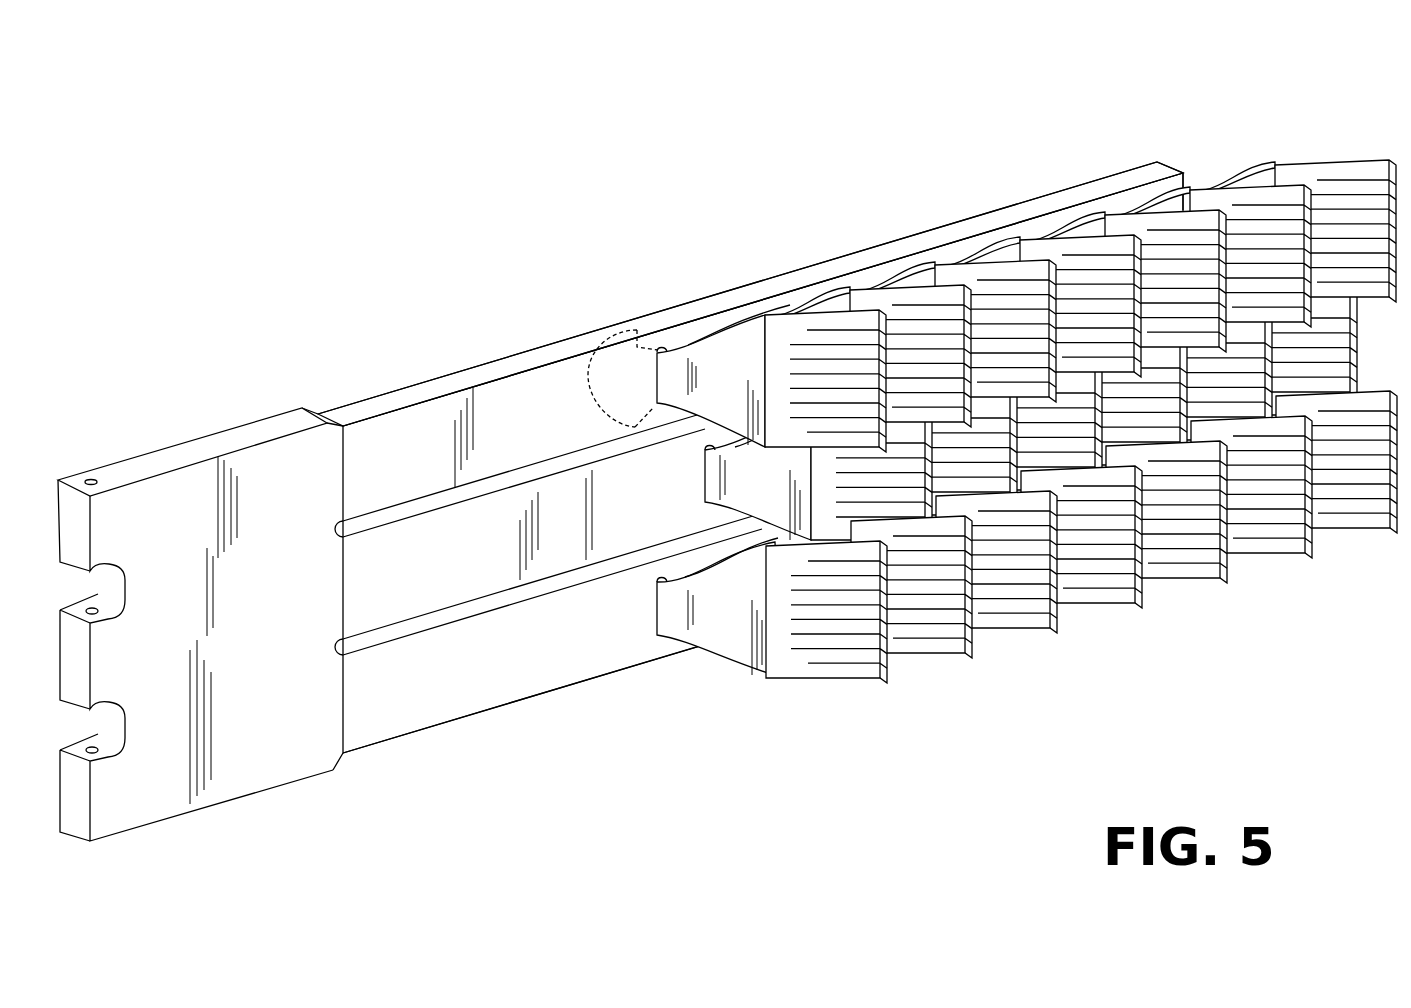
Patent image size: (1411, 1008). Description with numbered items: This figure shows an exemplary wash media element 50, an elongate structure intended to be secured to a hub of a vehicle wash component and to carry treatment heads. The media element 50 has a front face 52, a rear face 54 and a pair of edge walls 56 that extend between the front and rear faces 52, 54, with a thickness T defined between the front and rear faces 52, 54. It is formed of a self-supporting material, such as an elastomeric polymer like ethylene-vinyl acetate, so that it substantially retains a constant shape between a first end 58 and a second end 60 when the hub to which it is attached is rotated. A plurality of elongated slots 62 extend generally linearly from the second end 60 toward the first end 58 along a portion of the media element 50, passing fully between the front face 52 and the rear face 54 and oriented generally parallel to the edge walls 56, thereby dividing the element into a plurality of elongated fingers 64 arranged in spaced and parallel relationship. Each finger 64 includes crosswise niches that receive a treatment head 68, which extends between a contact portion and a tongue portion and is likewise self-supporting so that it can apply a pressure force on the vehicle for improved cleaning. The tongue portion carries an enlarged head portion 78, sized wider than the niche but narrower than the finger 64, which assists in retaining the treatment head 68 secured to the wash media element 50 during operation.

The media element 50 is at (657, 311).
The front face 52 is at (707, 332).
The rear face 54 is at (500, 357).
The edge walls 56 is at (455, 385).
The first end 58 is at (73, 527).
The second end 60 is at (1185, 167).
The elongated slots 62 is at (452, 603).
The elongated fingers 64 is at (952, 252).
The treatment head 68 is at (1377, 525).
The enlarged head portion 78 is at (588, 378).
The thickness T is at (398, 429).